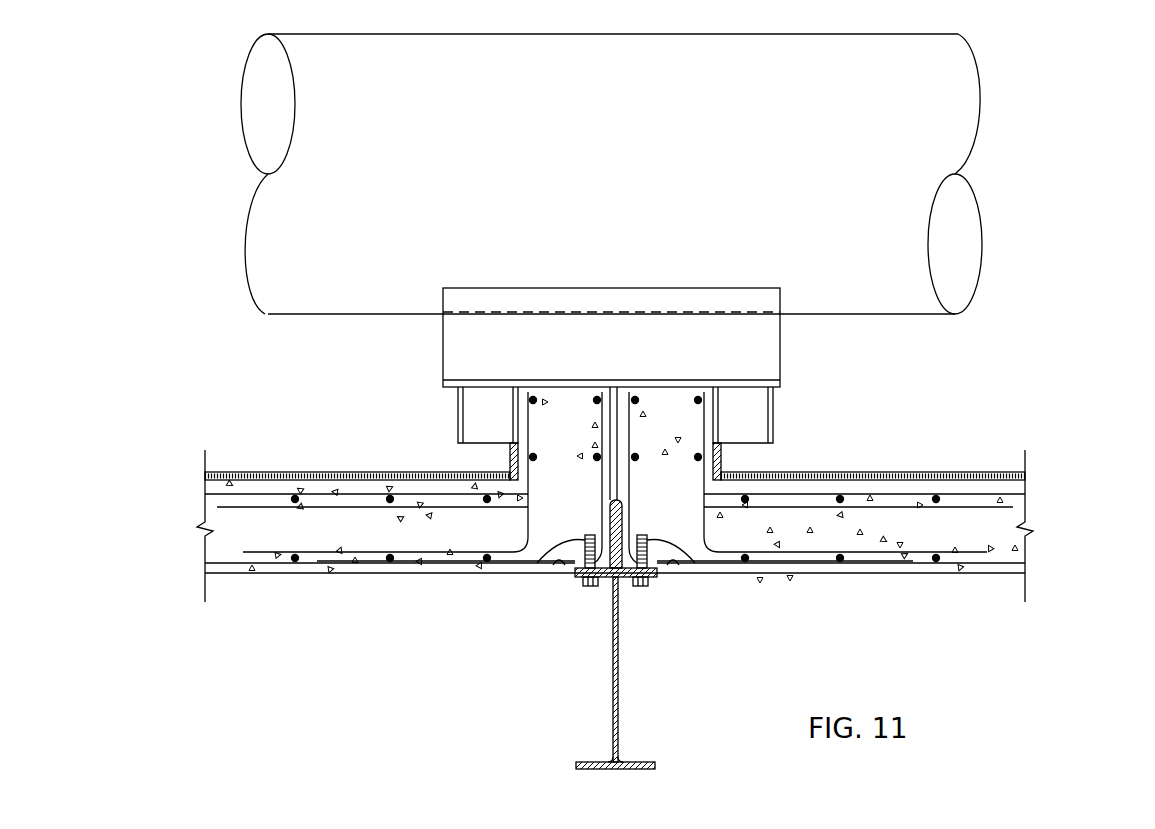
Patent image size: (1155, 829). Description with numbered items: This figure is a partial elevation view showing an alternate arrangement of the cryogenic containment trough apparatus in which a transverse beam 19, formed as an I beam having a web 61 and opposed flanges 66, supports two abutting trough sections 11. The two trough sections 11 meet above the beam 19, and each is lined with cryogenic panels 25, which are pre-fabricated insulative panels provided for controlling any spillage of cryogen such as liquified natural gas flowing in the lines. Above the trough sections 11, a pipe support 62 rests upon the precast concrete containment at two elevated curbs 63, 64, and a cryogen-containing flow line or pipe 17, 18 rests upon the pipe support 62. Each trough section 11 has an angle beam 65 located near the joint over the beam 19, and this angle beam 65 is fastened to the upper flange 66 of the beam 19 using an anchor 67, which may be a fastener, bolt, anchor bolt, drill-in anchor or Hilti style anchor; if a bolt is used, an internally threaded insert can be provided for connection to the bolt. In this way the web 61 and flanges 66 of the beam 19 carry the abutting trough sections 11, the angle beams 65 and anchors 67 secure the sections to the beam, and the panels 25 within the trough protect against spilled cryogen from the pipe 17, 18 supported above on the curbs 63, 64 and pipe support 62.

The trough section 11 is at (238, 534).
The flow line 17 is at (658, 173).
The flow line 18 is at (982, 103).
The transverse beam 19 is at (576, 763).
The cryogenic panel 25 is at (370, 472).
The web 61 is at (614, 692).
The pipe support 62 is at (775, 343).
The elevated curb 63 is at (579, 440).
The elevated curb 64 is at (687, 440).
The angle beam 65 is at (548, 578).
The flange 66 is at (582, 580).
The anchor 67 is at (535, 565).